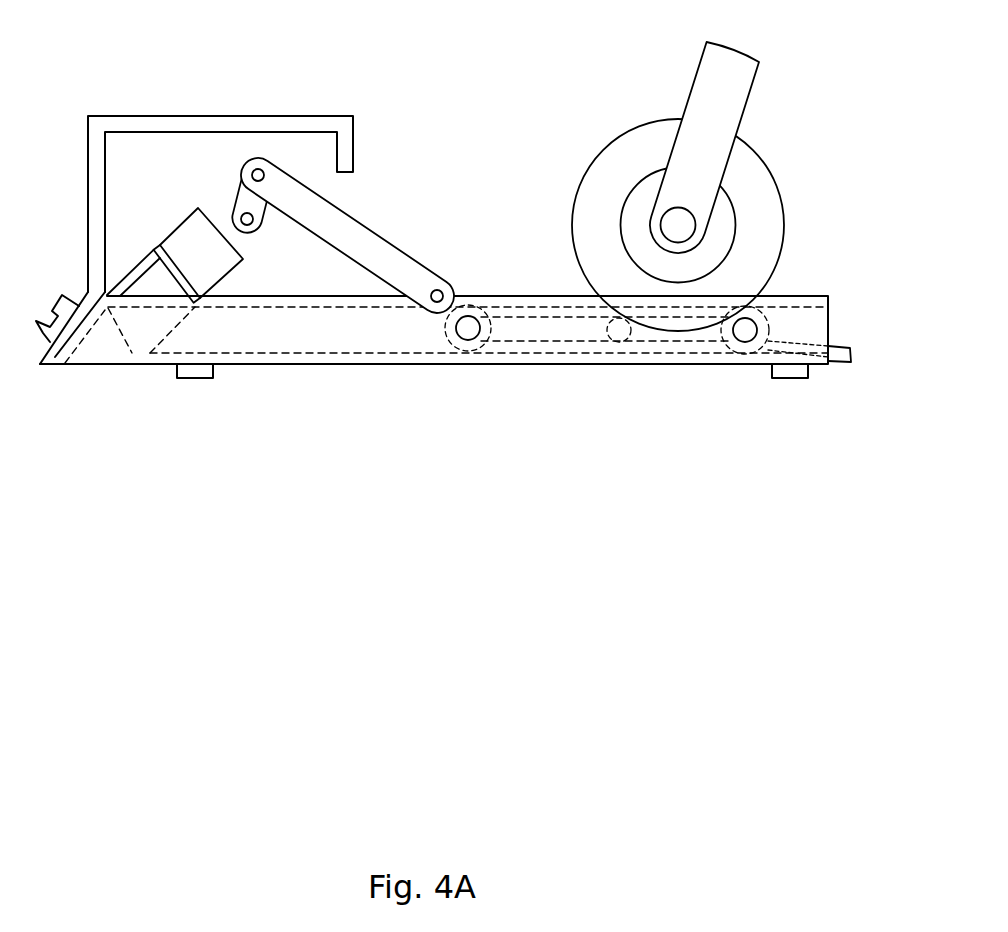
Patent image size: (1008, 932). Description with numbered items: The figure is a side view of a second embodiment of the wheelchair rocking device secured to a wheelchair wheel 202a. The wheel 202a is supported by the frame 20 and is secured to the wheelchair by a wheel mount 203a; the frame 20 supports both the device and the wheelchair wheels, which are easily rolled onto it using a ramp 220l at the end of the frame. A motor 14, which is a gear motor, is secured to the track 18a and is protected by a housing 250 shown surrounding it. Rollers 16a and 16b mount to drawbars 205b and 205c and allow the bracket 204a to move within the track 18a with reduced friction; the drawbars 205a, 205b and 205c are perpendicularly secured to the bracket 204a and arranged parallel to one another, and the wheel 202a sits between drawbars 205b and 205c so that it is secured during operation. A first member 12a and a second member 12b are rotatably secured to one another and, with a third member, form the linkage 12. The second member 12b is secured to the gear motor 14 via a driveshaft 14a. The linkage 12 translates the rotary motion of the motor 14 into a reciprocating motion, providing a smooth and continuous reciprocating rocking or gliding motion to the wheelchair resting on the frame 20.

The linkage 12 is at (333, 300).
The first member 12a is at (334, 250).
The second member 12b is at (232, 193).
The motor 14 is at (161, 222).
The driveshaft 14a is at (249, 238).
The roller 16a is at (470, 348).
The roller 16b is at (742, 358).
The track 18a is at (389, 364).
The frame 20 is at (292, 463).
The wheelchair wheel 202a is at (770, 164).
The wheel mount 203a is at (702, 63).
The bracket 204a is at (557, 364).
The drawbar 205a is at (453, 347).
The drawbar 205b is at (620, 353).
The drawbar 205c is at (758, 358).
The ramp 220l is at (833, 368).
The housing 250 is at (225, 116).